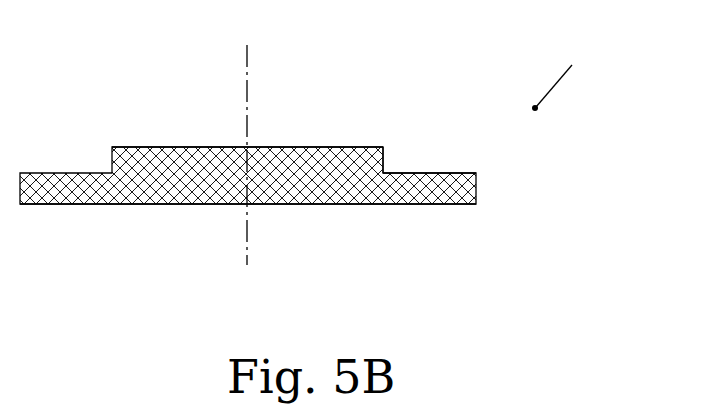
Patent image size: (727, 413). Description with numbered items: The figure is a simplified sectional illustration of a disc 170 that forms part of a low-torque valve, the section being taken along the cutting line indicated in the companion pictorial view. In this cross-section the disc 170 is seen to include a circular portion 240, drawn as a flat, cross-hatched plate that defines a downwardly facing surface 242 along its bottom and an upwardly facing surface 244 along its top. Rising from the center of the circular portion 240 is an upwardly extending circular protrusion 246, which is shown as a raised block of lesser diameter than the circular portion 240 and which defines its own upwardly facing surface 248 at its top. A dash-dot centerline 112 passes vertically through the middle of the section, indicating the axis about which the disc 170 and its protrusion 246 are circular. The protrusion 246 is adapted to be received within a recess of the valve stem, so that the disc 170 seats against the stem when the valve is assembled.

The central axis / centerline 112 is at (246, 57).
The disc 170 is at (567, 73).
The circular portion 240 is at (478, 197).
The downwardly facing surface 242 is at (438, 205).
The upwardly facing surface 244 is at (447, 172).
The upwardly extending circular protrusion 246 is at (392, 148).
The upwardly facing surface 248 is at (318, 147).